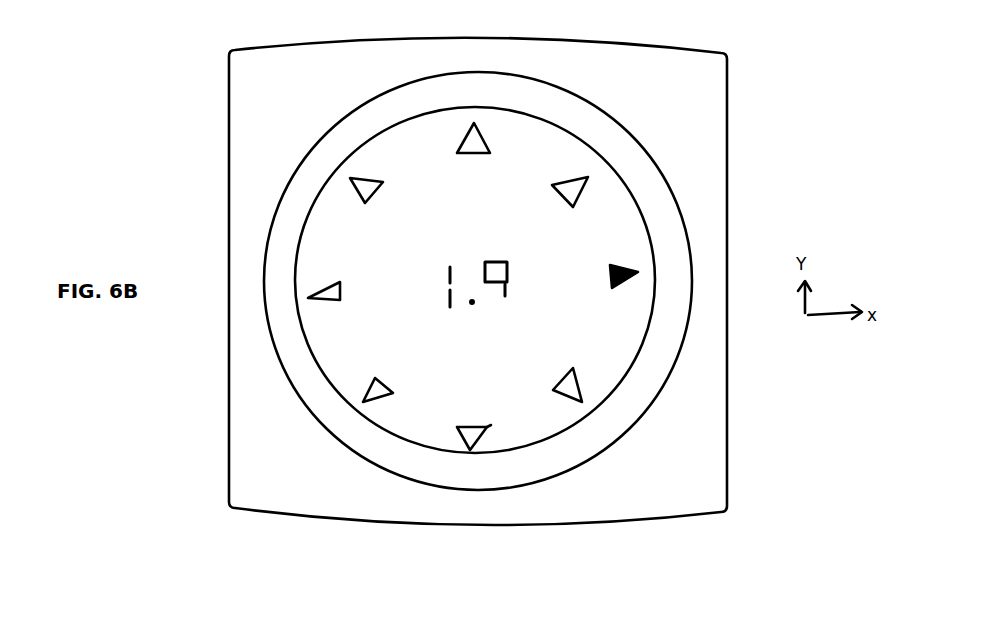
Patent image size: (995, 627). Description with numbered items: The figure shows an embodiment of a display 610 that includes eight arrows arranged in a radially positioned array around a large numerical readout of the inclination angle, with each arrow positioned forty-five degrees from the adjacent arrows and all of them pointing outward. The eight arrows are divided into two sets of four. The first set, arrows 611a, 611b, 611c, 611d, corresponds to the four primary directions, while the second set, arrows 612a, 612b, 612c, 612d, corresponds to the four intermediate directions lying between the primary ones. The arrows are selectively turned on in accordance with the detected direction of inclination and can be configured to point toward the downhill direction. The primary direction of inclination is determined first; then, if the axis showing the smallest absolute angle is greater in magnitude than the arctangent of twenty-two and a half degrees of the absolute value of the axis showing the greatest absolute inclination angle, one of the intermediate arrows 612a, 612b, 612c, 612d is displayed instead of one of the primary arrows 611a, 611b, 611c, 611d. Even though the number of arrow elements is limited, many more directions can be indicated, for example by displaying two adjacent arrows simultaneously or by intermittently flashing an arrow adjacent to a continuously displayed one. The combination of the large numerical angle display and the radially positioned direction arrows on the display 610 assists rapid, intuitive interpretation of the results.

The display 610 is at (680, 152).
The primary direction arrow 611a is at (473, 157).
The primary direction arrow 611b is at (608, 282).
The primary direction arrow 611c is at (475, 422).
The primary direction arrow 611d is at (342, 290).
The intermediate direction arrow 612a is at (565, 202).
The intermediate direction arrow 612b is at (557, 378).
The intermediate direction arrow 612c is at (382, 387).
The intermediate direction arrow 612d is at (376, 192).